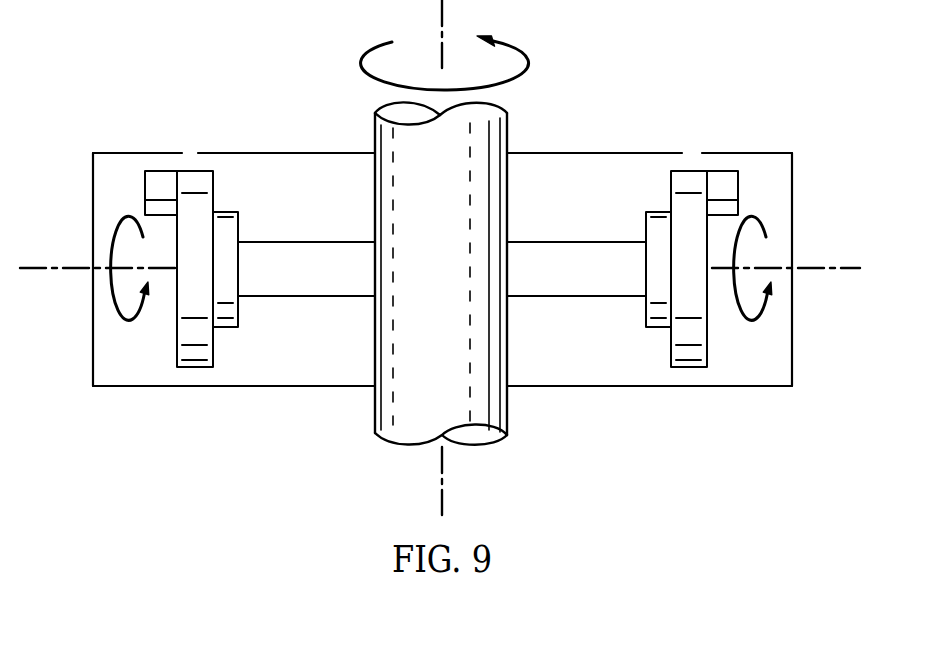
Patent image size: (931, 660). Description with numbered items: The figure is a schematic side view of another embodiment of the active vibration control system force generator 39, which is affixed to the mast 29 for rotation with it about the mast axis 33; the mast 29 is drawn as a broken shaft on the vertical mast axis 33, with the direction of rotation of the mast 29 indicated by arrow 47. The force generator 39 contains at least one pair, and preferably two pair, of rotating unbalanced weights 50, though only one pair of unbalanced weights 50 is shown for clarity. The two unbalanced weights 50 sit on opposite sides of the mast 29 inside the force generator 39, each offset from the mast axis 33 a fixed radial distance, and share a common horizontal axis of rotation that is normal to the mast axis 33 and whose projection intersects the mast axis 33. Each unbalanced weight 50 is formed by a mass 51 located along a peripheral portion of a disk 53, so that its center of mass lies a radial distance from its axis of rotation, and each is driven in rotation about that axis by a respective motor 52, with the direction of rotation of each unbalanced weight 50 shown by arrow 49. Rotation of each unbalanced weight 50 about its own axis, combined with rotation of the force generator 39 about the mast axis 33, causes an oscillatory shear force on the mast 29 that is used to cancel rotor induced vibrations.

The mast 29 is at (507, 400).
The mast axis 33 is at (442, 505).
The force generator 39 is at (585, 153).
The arrow 47 is at (524, 58).
The arrow 49 is at (130, 322).
The unbalanced weight 50 is at (441, 267).
The mass 51 is at (145, 193).
The motor 52 is at (240, 222).
The disk 53 is at (192, 367).